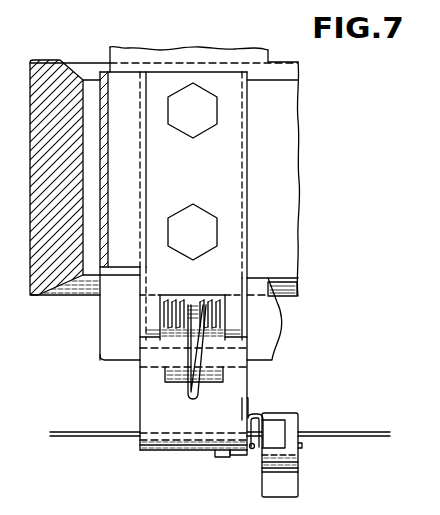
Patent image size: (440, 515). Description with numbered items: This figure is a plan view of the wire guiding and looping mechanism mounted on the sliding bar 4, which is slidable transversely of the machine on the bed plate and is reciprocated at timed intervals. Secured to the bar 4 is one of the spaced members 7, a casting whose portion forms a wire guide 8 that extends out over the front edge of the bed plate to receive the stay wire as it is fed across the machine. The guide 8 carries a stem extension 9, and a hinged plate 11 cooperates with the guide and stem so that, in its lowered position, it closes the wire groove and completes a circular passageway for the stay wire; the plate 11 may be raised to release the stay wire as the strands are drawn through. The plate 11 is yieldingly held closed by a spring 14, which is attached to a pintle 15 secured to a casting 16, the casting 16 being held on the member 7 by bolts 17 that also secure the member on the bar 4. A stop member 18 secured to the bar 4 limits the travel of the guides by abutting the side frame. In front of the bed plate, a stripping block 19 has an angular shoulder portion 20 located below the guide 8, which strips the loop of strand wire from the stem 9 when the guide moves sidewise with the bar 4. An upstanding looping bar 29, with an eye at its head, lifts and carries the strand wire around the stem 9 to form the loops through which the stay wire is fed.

The bar 4 is at (165, 171).
The member 7 is at (264, 319).
The wire guide 8 is at (170, 445).
The stem extension 9 is at (269, 438).
The hinged plate 11 is at (193, 358).
The spring 14 is at (199, 396).
The pintle 15 is at (196, 316).
The casting 16 is at (192, 129).
The bolt 17 is at (192, 232).
The stop member 18 is at (179, 261).
The stripping block 19 is at (236, 456).
The angular shoulder portion 20 is at (218, 458).
The looping bar 29 is at (297, 492).